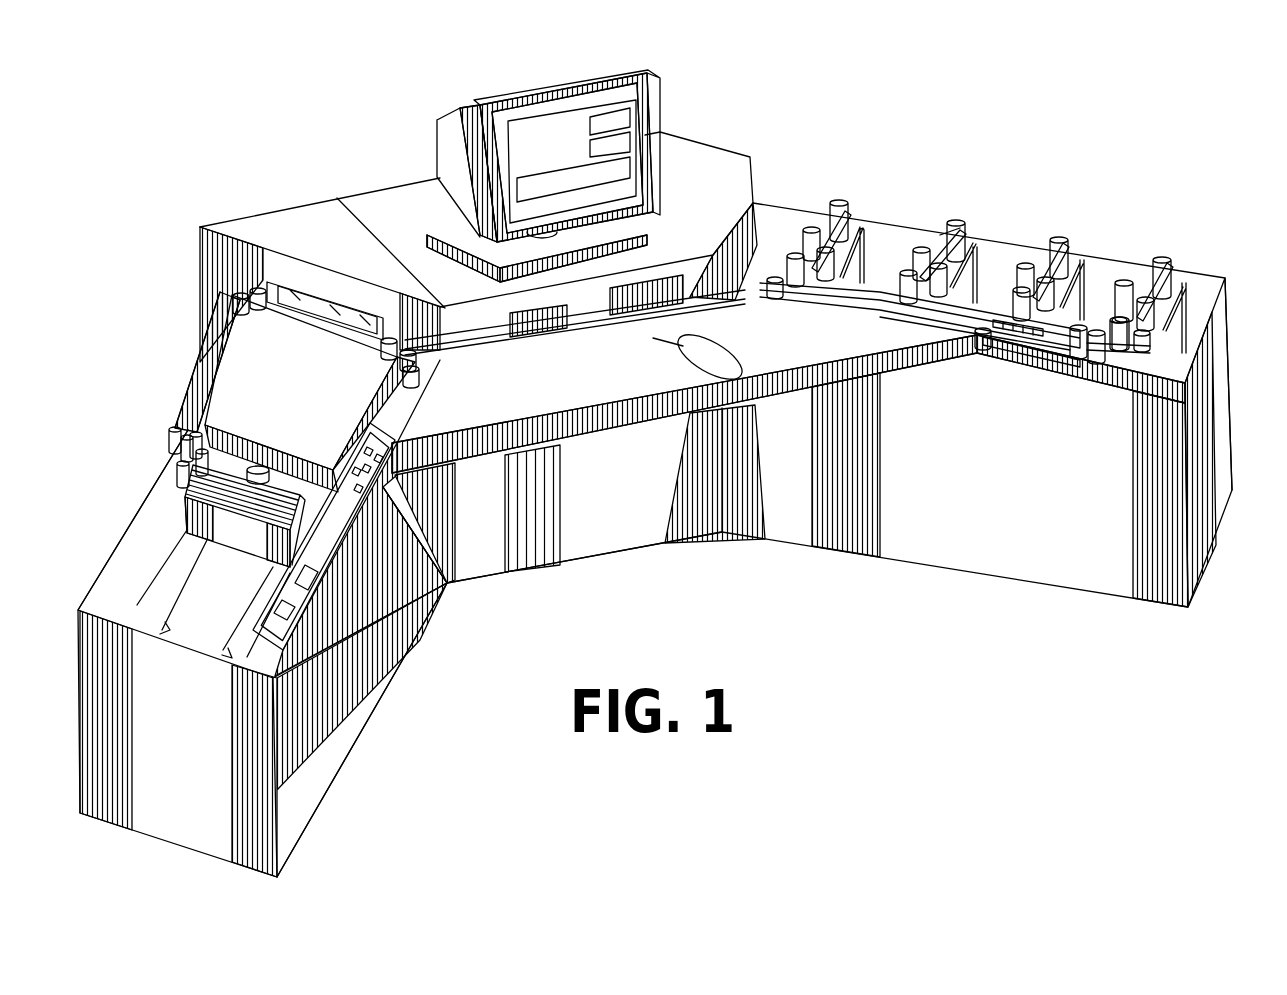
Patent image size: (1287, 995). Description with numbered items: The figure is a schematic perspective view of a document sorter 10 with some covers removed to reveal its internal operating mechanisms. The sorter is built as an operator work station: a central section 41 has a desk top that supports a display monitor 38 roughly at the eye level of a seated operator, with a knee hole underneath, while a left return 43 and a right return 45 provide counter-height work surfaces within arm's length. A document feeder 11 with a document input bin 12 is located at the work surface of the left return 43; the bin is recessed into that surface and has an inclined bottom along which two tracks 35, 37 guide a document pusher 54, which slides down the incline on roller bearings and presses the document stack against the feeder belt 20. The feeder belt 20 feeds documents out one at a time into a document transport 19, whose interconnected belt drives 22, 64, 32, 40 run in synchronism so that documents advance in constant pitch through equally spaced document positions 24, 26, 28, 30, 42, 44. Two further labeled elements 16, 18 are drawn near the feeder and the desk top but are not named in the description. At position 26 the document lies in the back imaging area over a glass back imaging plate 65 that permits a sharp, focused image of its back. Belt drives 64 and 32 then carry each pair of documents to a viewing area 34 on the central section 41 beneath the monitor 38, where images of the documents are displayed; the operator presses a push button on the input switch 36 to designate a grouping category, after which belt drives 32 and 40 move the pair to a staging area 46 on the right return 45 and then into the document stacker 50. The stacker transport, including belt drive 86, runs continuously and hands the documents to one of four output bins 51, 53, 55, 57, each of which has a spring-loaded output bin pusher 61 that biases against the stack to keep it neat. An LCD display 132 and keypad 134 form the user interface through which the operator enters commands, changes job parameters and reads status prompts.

The document sorter 10 is at (736, 121).
The document feeder 11 is at (183, 507).
The document input bin 12 is at (262, 660).
The keyboard 16 is at (245, 352).
The work surface 18 is at (278, 242).
The document transport 19 is at (423, 372).
The feeder belt 20 is at (218, 442).
The belt drive 22 is at (170, 440).
The document position 24 is at (200, 378).
The document position 26 is at (310, 298).
The document position 28 is at (533, 313).
The document position 30 is at (653, 288).
The belt drive 32 is at (580, 322).
The viewing area 34 is at (583, 293).
The track 35 is at (166, 636).
The input switch 36 is at (727, 344).
The track 37 is at (234, 654).
The display monitor 38 is at (545, 95).
The belt drive 40 is at (1060, 352).
The central section 41 is at (680, 184).
The document position 42 is at (907, 310).
The left return 43 is at (130, 741).
The document position 44 is at (1015, 344).
The right return 45 is at (1208, 414).
The staging area 46 is at (984, 354).
The document stacker 50 is at (966, 212).
The output bin 51 is at (1140, 272).
The output bin 53 is at (1045, 266).
The document pusher 54 is at (240, 530).
The output bin 55 is at (940, 236).
The output bin 57 is at (830, 228).
The output bin pusher 61 is at (858, 245).
The belt drive 64 is at (345, 320).
The back imaging plate 65 is at (263, 282).
The belt drive 86 is at (1093, 365).
The LCD display 132 is at (328, 540).
The keypad 134 is at (447, 583).